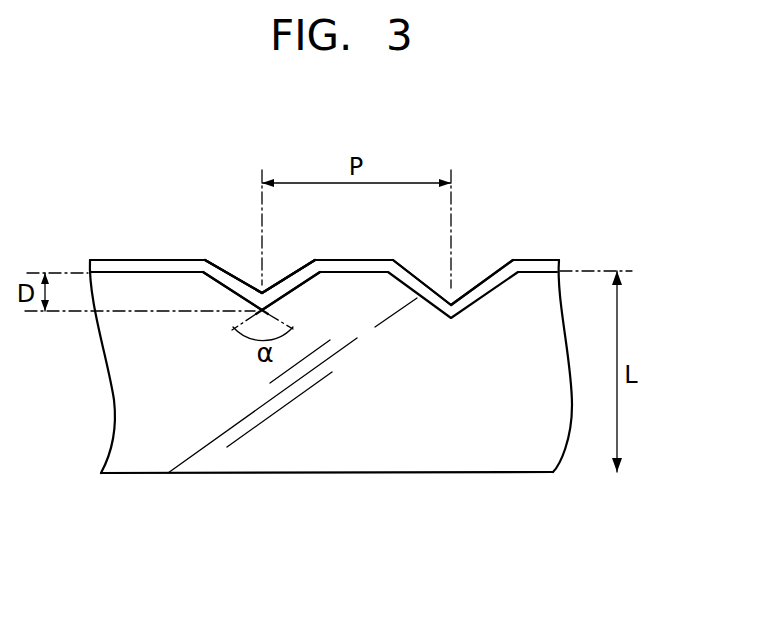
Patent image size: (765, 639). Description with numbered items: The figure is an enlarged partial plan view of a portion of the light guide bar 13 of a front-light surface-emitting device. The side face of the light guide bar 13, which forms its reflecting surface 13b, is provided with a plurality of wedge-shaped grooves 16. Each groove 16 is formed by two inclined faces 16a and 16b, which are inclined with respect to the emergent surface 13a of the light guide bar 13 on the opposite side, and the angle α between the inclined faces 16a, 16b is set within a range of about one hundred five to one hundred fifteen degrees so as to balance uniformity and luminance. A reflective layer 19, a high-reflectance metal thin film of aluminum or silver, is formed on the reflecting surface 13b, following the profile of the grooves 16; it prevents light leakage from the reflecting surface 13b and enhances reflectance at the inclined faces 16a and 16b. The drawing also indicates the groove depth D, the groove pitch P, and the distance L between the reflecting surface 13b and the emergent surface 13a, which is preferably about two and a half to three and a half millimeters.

The light guide bar 13 is at (410, 367).
The emergent surface 13a is at (247, 474).
The reflecting surface 13b is at (133, 272).
The wedge-shaped groove 16 is at (118, 175).
The inclined face 16a is at (237, 285).
The inclined face 16b is at (303, 273).
The reflective layer 19 is at (538, 263).